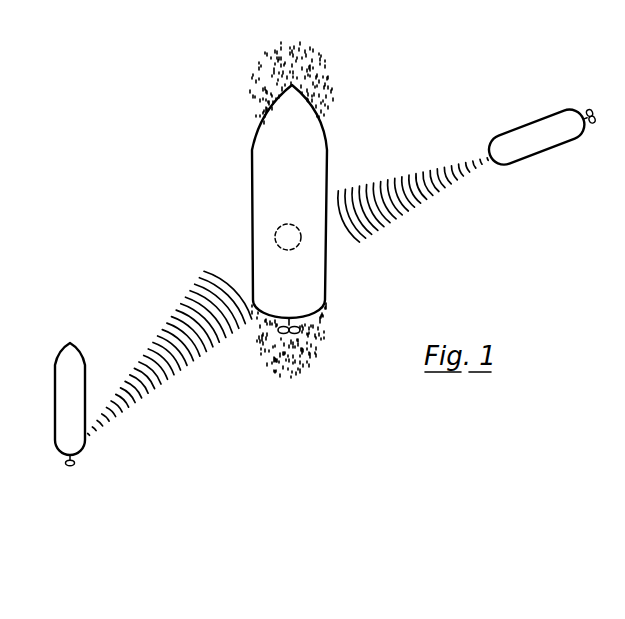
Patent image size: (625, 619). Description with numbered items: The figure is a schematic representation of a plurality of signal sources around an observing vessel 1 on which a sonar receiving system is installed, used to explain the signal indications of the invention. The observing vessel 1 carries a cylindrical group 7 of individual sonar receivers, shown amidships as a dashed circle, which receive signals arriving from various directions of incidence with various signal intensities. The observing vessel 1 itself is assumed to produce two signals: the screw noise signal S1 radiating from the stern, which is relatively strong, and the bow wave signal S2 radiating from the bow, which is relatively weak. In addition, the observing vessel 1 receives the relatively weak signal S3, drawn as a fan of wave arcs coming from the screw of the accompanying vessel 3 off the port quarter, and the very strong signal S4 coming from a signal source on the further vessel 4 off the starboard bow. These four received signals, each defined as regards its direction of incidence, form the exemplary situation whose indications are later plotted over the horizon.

The observing vessel 1 is at (310, 138).
The accompanying vessel 3 is at (67, 374).
The further vessel 4 is at (558, 133).
The cylindrical group of individual sonar receivers 7 is at (282, 236).
The screw noise signal S1 is at (308, 358).
The bow wave signal S2 is at (296, 61).
The signal from accompanying vessel screw S3 is at (187, 358).
The signal from further vessel S4 is at (440, 190).